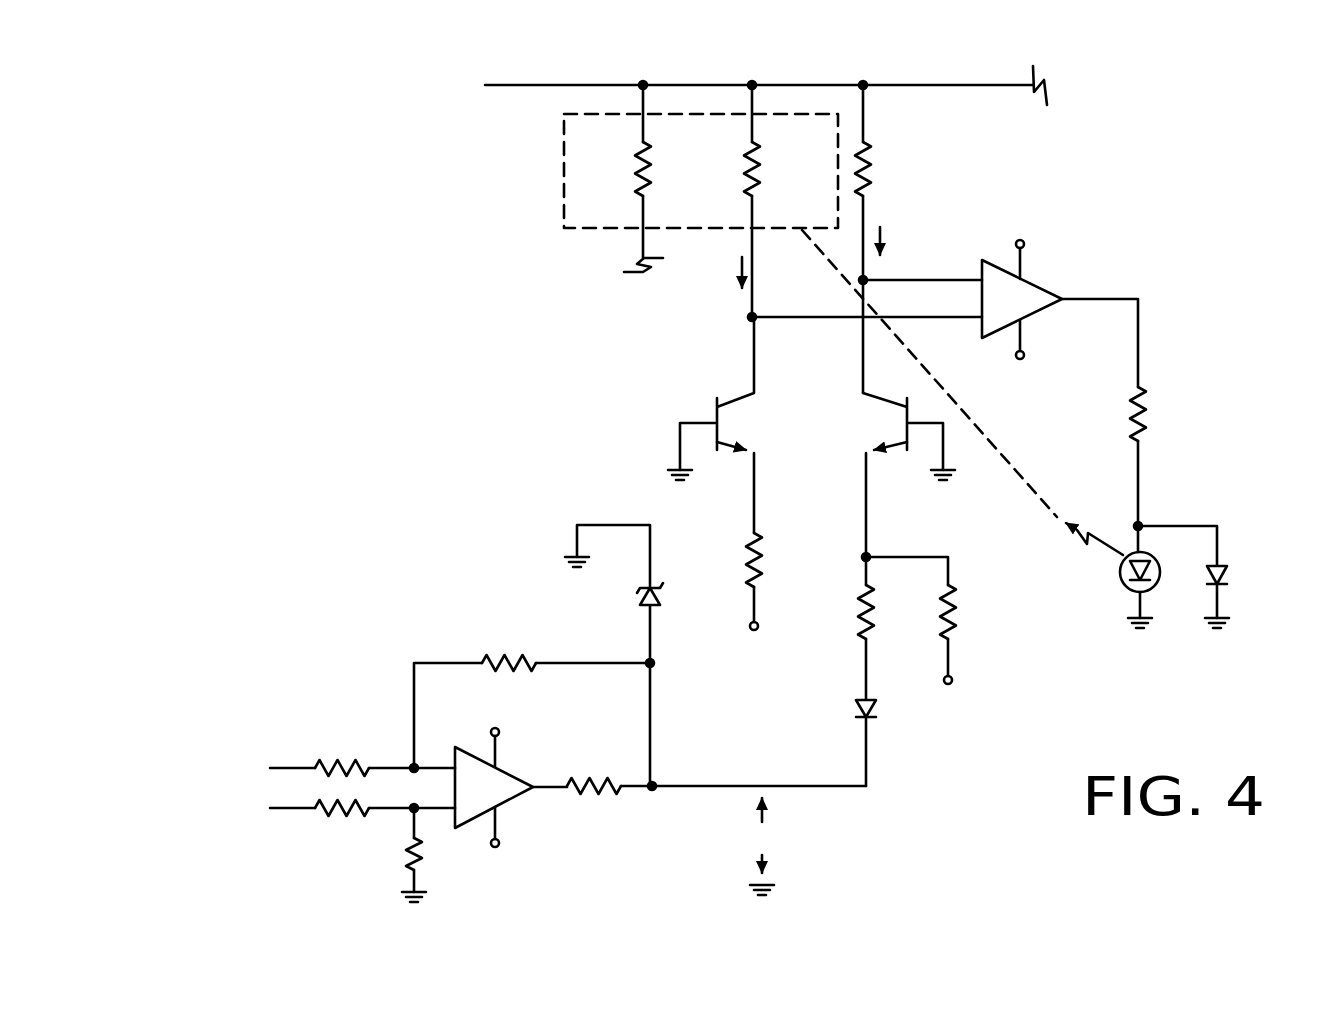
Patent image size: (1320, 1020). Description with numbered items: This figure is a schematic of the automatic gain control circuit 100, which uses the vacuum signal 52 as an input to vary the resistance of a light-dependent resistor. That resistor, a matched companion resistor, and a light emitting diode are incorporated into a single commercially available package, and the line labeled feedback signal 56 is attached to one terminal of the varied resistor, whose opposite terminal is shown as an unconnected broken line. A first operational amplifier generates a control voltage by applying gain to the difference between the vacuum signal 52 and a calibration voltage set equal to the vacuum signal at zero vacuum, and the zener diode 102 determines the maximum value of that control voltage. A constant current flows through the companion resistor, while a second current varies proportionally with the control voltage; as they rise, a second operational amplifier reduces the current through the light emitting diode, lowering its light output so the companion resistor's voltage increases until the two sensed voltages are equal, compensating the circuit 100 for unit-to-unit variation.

The circuit 100 is at (438, 380).
The feedback signal 56 is at (685, 83).
The vacuum signal 52 is at (300, 768).
The zener diode 102 is at (636, 596).